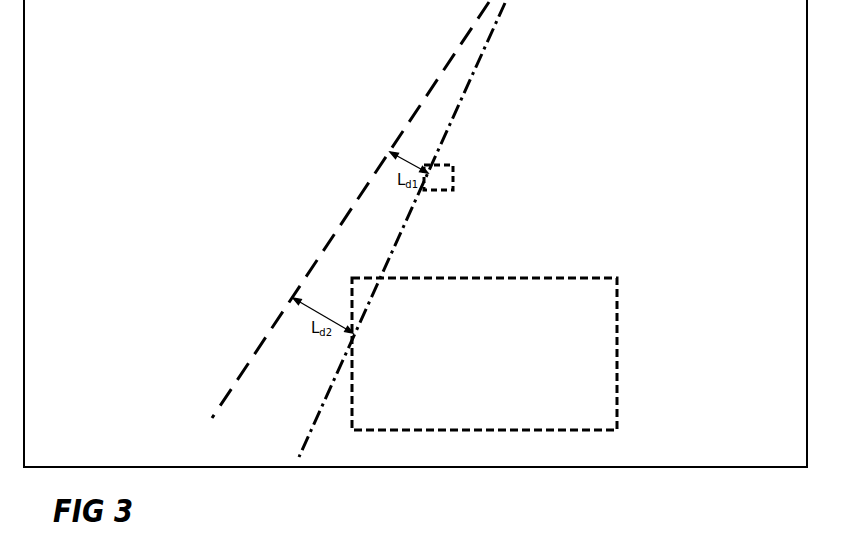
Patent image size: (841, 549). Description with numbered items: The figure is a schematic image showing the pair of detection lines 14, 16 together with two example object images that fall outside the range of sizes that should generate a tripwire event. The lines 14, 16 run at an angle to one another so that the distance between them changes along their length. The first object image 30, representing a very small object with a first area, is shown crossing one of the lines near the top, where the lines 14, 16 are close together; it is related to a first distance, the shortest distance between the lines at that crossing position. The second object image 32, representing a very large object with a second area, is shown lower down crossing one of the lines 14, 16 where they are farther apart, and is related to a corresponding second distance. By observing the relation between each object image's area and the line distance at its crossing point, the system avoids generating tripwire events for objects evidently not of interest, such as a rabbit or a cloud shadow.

The line 14 is at (417, 205).
The line 16 is at (343, 222).
The object image 30 is at (442, 173).
The object image 32 is at (603, 300).